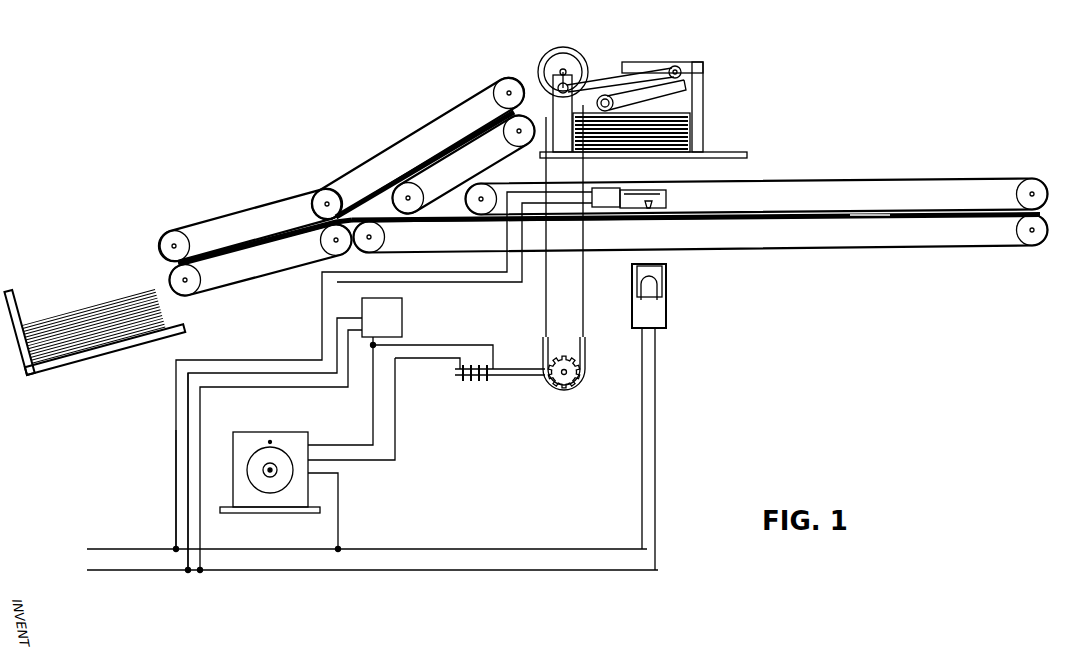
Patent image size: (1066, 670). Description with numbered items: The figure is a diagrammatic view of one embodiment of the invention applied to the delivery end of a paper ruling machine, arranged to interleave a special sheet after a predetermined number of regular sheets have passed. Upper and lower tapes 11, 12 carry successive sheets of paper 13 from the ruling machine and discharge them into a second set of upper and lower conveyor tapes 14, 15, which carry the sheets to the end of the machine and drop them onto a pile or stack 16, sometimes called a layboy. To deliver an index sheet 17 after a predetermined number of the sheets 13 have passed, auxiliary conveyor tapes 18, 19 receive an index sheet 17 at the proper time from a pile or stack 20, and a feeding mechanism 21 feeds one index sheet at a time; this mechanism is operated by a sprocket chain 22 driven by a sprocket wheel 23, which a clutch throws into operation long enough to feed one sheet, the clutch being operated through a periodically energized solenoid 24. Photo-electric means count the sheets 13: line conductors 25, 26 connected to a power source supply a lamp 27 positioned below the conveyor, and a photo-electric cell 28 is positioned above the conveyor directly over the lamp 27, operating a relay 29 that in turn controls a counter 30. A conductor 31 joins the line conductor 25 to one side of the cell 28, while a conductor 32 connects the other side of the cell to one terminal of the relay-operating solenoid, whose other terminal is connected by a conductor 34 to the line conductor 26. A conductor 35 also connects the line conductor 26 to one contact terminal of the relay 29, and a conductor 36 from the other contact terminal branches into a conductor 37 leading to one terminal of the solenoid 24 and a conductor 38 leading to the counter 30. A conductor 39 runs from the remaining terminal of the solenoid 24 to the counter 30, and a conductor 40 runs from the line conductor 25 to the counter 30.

The upper tape 11 is at (873, 212).
The lower tape 12 is at (863, 220).
The sheets of paper 13 is at (247, 250).
The upper conveyor tape 14 is at (267, 232).
The lower conveyor tape 15 is at (273, 243).
The pile or stack 16 is at (48, 372).
The index sheet 17 is at (425, 160).
The auxiliary conveyor tape 18 is at (467, 138).
The auxiliary conveyor tape 19 is at (460, 150).
The pile or stack 20 is at (687, 130).
The feeding mechanism 21 is at (617, 92).
The sprocket chain 22 is at (587, 340).
The sprocket wheel 23 is at (570, 377).
The solenoid 24 is at (472, 380).
The line conductor 25 is at (102, 548).
The line conductor 26 is at (100, 570).
The lamp 27 is at (665, 287).
The photo-electric cell 28 is at (668, 198).
The relay 29 is at (402, 307).
The counter 30 is at (267, 430).
The conductor 31 is at (175, 462).
The conductor 32 is at (478, 283).
The conductor 34 is at (184, 420).
The conductor 35 is at (200, 422).
The conductor 36 is at (375, 344).
The conductor 37 is at (453, 343).
The conductor 38 is at (373, 400).
The conductor 39 is at (397, 410).
The conductor 40 is at (343, 513).